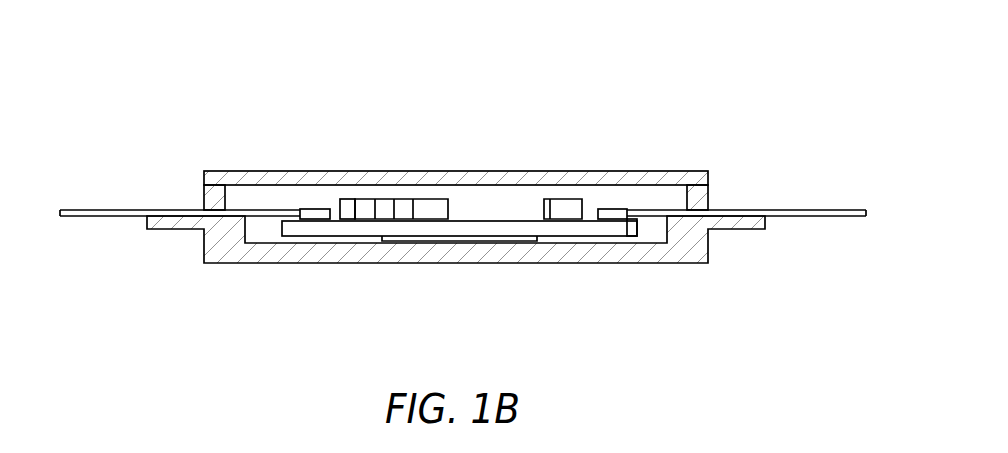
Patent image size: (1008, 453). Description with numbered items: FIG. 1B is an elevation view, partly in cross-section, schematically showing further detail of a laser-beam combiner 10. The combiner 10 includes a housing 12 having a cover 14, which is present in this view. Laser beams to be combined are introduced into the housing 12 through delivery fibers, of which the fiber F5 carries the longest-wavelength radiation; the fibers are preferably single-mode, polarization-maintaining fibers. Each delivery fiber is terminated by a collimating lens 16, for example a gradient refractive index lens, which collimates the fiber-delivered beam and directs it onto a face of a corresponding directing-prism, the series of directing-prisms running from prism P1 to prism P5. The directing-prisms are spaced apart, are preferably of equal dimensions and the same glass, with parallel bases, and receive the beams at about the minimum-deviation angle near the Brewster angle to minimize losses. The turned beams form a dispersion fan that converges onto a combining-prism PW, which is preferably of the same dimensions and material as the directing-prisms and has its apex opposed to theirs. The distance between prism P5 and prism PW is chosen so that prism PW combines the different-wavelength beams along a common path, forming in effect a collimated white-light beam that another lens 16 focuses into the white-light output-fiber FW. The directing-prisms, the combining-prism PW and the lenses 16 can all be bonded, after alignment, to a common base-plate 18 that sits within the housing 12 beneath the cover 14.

The laser-beam combiner 10 is at (463, 252).
The housing 12 is at (577, 267).
The cover 14 is at (595, 174).
The collimating lens 16 is at (312, 209).
The base-plate 18 is at (294, 231).
The directing-prism P1 is at (349, 199).
The directing-prism P5 is at (437, 199).
The combining-prism PW is at (557, 204).
The delivery fiber F5 is at (131, 210).
The white-light output-fiber FW is at (803, 210).